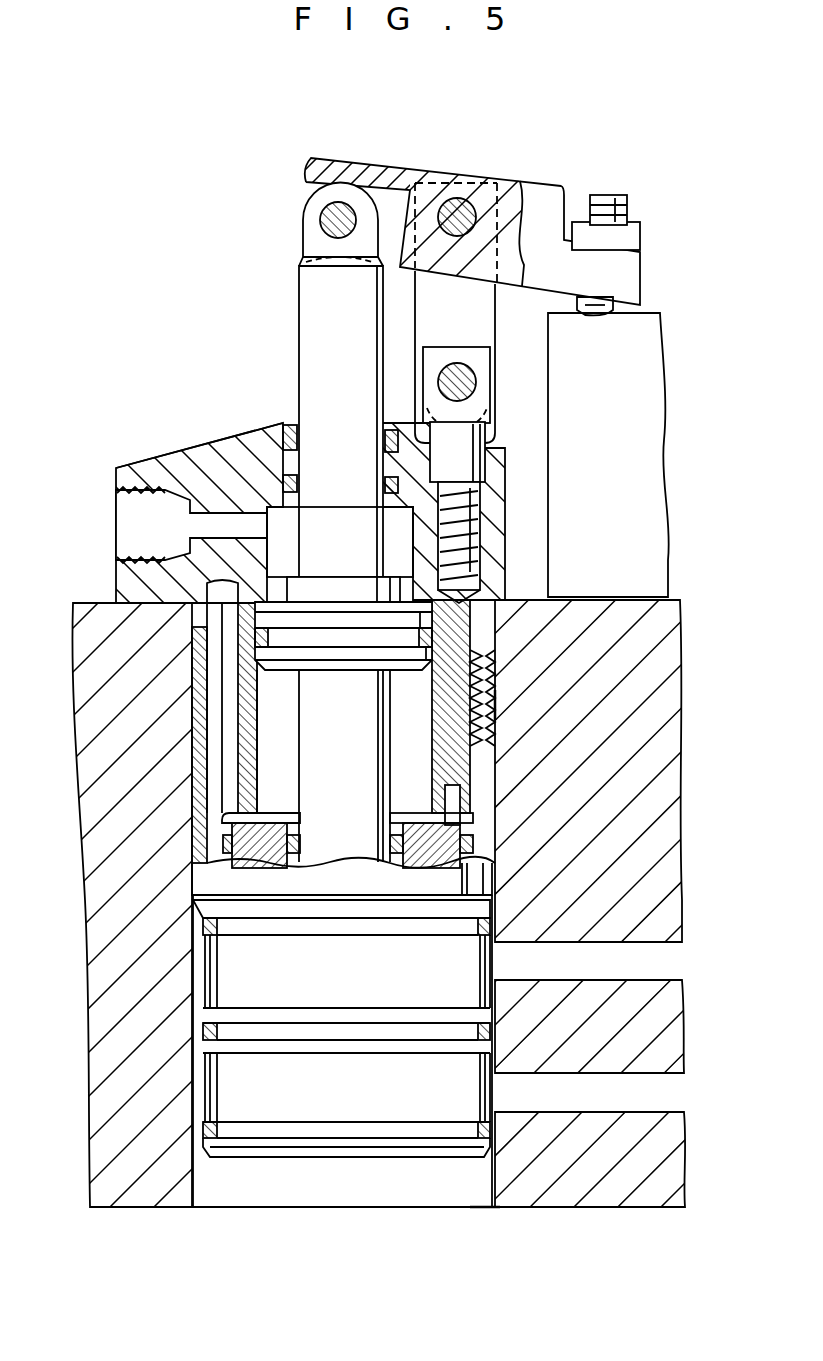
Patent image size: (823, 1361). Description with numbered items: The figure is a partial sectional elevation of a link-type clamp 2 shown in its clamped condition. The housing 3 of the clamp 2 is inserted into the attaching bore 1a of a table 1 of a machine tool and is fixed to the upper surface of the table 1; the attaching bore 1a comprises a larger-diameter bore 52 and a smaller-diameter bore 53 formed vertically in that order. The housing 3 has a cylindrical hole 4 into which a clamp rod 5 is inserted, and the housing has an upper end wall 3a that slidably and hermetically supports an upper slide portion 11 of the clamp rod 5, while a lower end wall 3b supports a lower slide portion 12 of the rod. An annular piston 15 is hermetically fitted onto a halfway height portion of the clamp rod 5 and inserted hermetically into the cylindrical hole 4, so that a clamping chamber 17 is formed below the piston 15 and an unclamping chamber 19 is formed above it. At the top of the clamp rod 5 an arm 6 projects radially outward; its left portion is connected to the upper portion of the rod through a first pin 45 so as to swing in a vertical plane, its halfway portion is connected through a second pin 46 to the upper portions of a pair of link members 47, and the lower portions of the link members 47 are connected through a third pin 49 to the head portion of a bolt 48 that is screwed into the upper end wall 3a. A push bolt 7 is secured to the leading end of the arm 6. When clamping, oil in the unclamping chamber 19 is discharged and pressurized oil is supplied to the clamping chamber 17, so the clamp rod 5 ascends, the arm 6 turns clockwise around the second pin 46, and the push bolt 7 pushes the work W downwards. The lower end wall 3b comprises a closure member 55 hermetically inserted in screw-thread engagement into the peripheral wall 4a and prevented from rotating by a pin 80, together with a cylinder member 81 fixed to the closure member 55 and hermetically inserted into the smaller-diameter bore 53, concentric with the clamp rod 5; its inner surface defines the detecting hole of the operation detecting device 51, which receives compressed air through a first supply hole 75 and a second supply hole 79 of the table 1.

The table 1 is at (668, 760).
The attaching bore 1a is at (495, 670).
The clamp 2 is at (208, 325).
The housing 3 is at (411, 680).
The upper end wall 3a is at (253, 430).
The lower end wall 3b is at (200, 880).
The cylindrical hole 4 is at (398, 712).
The peripheral wall 4a is at (482, 735).
The clamp rod 5 is at (307, 370).
The arm 6 is at (366, 680).
The push bolt 7 is at (600, 197).
The upper slide portion 11 is at (316, 459).
The lower slide portion 12 is at (345, 848).
The annular piston 15 is at (333, 655).
The clamping chamber 17 is at (288, 792).
The unclamping chamber 19 is at (300, 540).
The first pin 45 is at (320, 208).
The second pin 46 is at (457, 198).
The link member 47 is at (498, 312).
The bolt 48 is at (485, 440).
The third pin 49 is at (478, 382).
The operation detecting device 51 is at (260, 1051).
The larger-diameter bore 52 is at (495, 705).
The smaller-diameter bore 53 is at (490, 1195).
The closure member 55 is at (270, 852).
The first supply hole 75 is at (668, 965).
The second supply hole 79 is at (668, 1105).
The pin 80 is at (468, 800).
The cylinder member 81 is at (346, 1170).
The work W is at (665, 443).